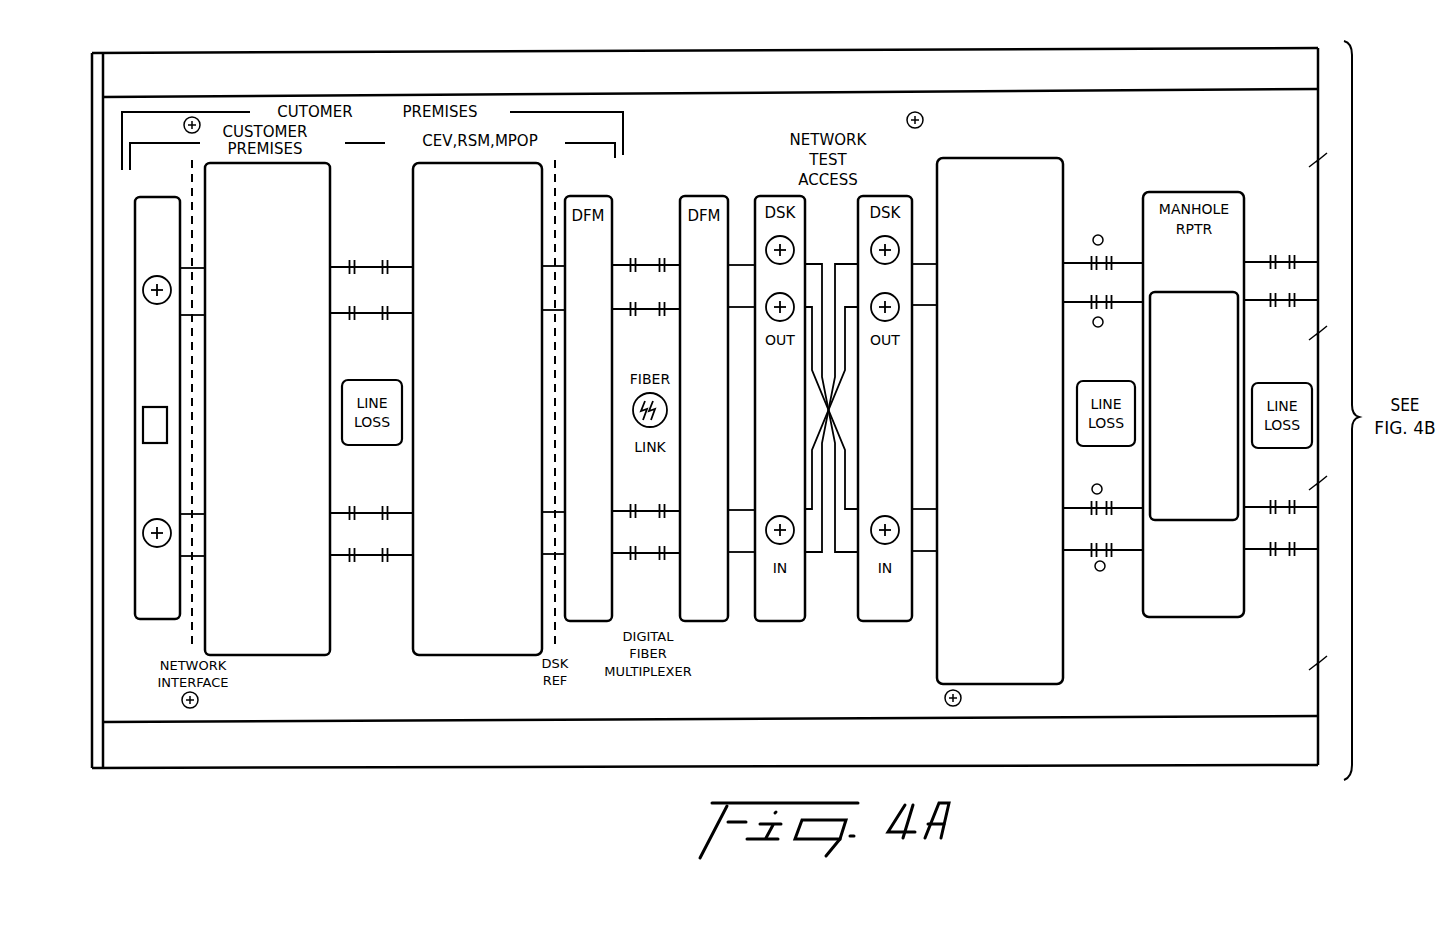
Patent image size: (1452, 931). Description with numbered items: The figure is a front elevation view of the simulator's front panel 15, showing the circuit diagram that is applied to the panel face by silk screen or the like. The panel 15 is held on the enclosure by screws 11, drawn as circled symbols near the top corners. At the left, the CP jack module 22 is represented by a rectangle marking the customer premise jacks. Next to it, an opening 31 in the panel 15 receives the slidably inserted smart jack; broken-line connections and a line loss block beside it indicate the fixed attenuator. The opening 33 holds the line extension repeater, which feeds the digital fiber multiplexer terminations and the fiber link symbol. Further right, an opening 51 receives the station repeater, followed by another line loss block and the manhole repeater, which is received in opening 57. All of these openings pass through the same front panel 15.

The screws 11 is at (192, 117).
The front panel 15 is at (1126, 705).
The CP jack unit or module 22 is at (135, 252).
The opening 31 is at (330, 337).
The opening 33 is at (541, 345).
The opening 51 is at (1063, 337).
The opening 57 is at (1213, 292).